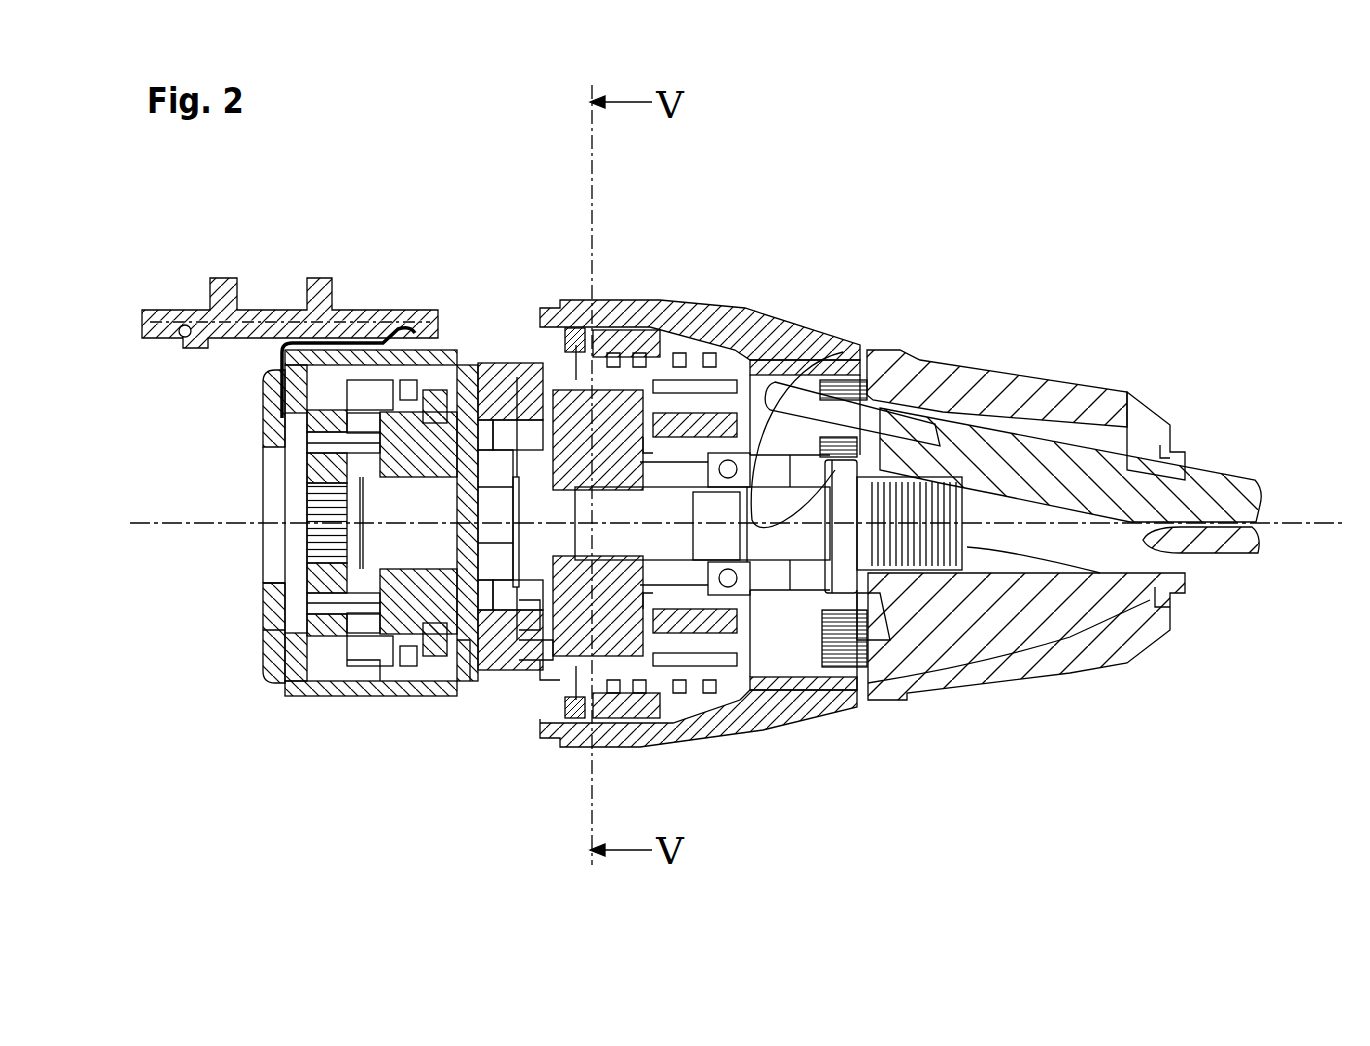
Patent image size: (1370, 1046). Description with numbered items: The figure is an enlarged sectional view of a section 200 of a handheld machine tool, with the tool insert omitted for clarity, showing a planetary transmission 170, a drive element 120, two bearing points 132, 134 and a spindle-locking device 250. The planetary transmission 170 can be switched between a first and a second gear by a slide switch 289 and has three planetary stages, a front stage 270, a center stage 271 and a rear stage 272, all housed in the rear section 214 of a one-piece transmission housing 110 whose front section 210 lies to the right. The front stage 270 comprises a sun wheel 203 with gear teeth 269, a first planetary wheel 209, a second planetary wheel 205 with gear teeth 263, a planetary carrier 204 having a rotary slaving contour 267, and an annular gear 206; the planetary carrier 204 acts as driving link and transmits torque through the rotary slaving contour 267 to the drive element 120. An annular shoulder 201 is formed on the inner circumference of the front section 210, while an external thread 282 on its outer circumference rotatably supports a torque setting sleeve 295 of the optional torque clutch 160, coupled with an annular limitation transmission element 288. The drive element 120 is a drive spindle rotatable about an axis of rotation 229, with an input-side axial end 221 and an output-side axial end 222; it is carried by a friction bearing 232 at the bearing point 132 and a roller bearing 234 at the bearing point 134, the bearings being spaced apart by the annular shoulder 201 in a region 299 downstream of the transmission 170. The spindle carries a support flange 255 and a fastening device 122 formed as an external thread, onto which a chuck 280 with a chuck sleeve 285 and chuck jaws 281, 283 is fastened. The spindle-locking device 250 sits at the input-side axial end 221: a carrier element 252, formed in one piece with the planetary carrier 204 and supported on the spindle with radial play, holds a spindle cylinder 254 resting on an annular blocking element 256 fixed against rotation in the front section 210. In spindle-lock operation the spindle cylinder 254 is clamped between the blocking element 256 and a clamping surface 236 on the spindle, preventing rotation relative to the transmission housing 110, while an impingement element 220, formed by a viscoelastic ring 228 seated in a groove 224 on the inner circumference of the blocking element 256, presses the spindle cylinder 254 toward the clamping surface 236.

The section 200 is at (1224, 186).
The slide switch 289 is at (178, 308).
The second planetary wheel 205 is at (285, 385).
The planetary transmission 170 is at (423, 698).
The impingement element 220 is at (460, 537).
The clamping surface 236 is at (380, 518).
The spindle cylinder 254 is at (310, 418).
The input-side axial end 221 is at (375, 473).
The center stage 271 is at (400, 365).
The rear section 214 is at (313, 693).
The rear stage 272 is at (352, 694).
The gear teeth 269 is at (457, 697).
The sun wheel 203 is at (505, 340).
The gear teeth 263 is at (462, 345).
The planetary carrier 204 is at (525, 340).
The transmission housing 110 is at (470, 345).
The friction bearing 232 is at (525, 345).
The rotary slaving contour 267 is at (560, 545).
The spindle-locking device 250 is at (590, 610).
The first planetary wheel 209 is at (500, 680).
The front stage 270 is at (520, 683).
The annular gear 206 is at (547, 680).
The annular limitation transmission element 288 is at (592, 753).
The viscoelastic ring 228 is at (627, 707).
The groove 224 is at (653, 710).
The torque clutch 160 is at (755, 348).
The external thread 282 is at (626, 345).
The region 299 is at (690, 345).
The bearing point 132 is at (576, 345).
The front section 210 is at (700, 683).
The annular shoulder 201 is at (775, 685).
The roller bearing 234 is at (790, 650).
The blocking element 256 is at (660, 713).
The carrier element 252 is at (668, 345).
The drive element 120 is at (777, 490).
The torque setting sleeve 295 is at (835, 347).
The bearing point 134 is at (855, 460).
The fastening device 122 is at (910, 475).
The support flange 255 is at (843, 565).
The chuck 280 is at (1113, 385).
The output-side axial end 222 is at (1013, 460).
The chuck jaw 281 is at (1230, 490).
The chuck jaw 283 is at (1230, 546).
The chuck sleeve 285 is at (1085, 660).
The axis of rotation 229 is at (1338, 522).